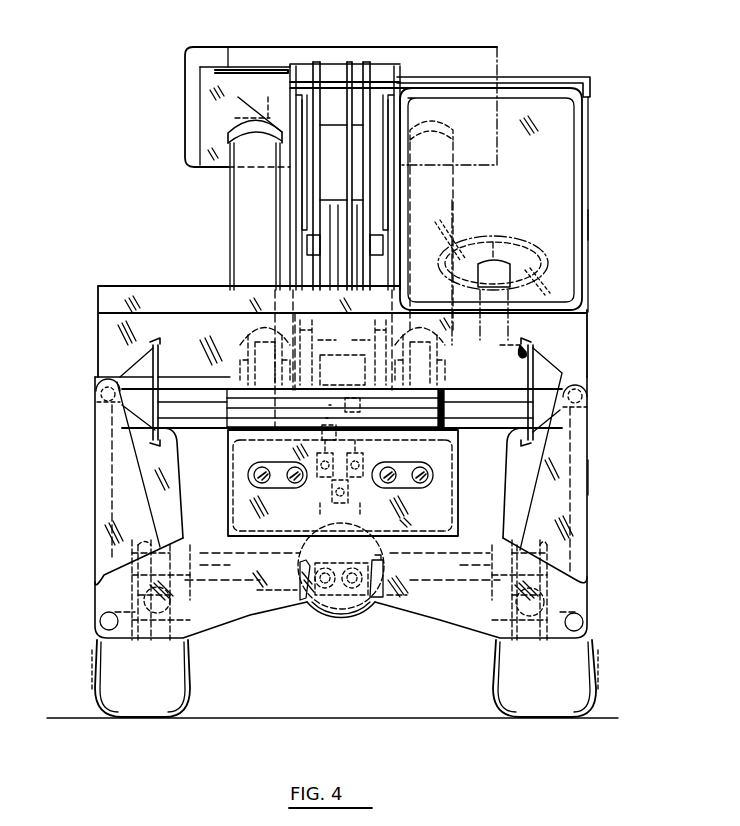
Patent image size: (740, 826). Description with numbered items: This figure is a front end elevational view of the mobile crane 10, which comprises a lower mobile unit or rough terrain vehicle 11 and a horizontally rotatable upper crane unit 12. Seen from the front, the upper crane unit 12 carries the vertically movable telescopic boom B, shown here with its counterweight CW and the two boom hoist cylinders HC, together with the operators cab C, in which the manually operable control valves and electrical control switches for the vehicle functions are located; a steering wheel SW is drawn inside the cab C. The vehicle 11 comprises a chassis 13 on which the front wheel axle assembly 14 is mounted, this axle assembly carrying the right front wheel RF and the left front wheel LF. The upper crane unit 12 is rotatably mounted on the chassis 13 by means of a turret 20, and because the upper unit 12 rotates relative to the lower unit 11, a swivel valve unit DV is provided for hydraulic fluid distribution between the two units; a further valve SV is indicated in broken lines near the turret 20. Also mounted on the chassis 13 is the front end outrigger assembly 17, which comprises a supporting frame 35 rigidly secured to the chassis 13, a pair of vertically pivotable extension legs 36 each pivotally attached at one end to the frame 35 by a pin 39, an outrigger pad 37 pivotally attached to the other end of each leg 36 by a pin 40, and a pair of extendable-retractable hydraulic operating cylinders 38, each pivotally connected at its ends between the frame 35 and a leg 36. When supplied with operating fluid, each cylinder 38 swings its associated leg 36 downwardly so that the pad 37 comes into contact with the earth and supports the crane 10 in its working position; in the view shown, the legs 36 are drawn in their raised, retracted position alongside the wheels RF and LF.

The counterweight CW is at (216, 48).
The boom hoist cylinder HC is at (232, 229).
The telescopic boom B is at (312, 189).
The operators cab C is at (581, 160).
The steering wheel SW is at (521, 242).
The mobile crane 10 is at (596, 226).
The upper crane unit 12 is at (598, 325).
The steering valve SV is at (512, 340).
The outrigger pad 37 is at (117, 365).
The pin 40 is at (97, 402).
The turret 20 is at (452, 420).
The chassis 13 is at (460, 481).
The swivel valve unit DV is at (372, 460).
The rough terrain vehicle 11 is at (600, 477).
The extension leg 36 is at (100, 487).
The supporting frame 35 is at (250, 620).
The hydraulic operating cylinder 38 is at (216, 618).
The front end outrigger assembly 17 is at (272, 607).
The front wheel axle assembly 14 is at (353, 619).
The pin 39 is at (100, 630).
The right front wheel RF is at (188, 695).
The left front wheel LF is at (594, 692).